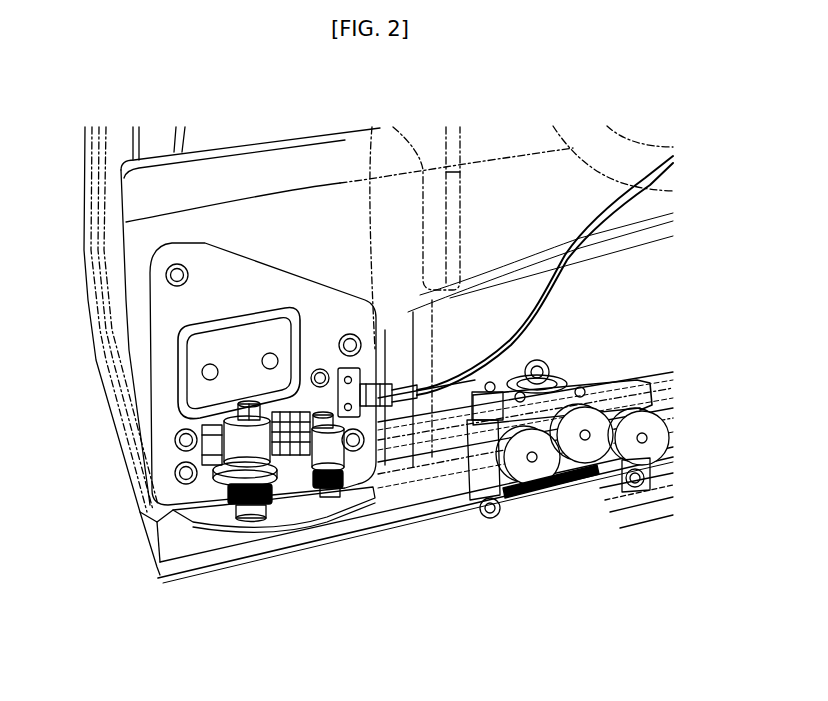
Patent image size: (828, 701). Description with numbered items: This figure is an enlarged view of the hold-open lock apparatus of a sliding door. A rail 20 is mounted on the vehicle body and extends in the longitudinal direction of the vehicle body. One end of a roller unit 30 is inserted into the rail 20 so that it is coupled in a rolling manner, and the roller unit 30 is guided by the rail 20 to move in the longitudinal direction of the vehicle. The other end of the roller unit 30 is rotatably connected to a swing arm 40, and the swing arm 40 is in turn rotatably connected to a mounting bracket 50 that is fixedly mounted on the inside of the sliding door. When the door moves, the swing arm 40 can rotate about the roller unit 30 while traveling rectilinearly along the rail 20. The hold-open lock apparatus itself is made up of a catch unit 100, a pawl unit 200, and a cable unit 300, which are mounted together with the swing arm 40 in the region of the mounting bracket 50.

The rail 20 is at (652, 374).
The roller unit 30 is at (512, 520).
The swing arm 40 is at (413, 483).
The mounting bracket 50 is at (160, 352).
The catch unit 100 is at (253, 522).
The pawl unit 200 is at (335, 497).
The cable unit 300 is at (390, 376).